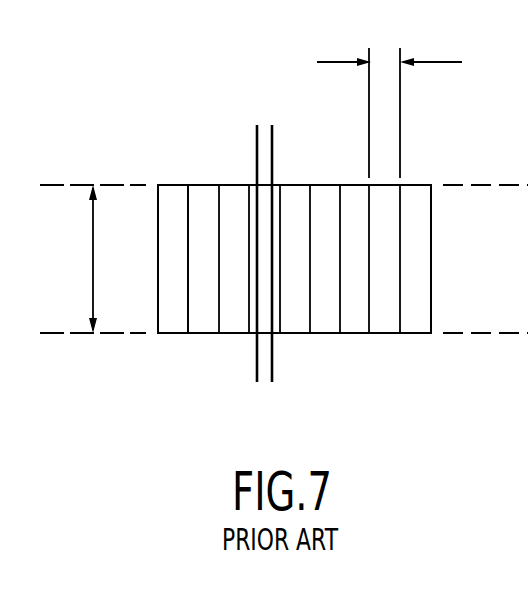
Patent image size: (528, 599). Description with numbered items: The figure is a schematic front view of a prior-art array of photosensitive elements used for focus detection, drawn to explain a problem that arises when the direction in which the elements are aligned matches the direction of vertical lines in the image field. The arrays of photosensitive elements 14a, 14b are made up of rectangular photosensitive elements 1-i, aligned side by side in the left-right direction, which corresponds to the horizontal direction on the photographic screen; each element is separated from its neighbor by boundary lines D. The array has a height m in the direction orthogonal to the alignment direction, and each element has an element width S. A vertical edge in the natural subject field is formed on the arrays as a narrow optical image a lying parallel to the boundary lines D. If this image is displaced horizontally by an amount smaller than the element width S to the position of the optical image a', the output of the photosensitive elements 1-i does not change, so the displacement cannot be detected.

The photosensitive elements 1-i is at (241, 320).
The boundary lines D is at (187, 313).
The array of photosensitive elements 14a is at (371, 333).
The array of photosensitive elements 14b is at (399, 229).
The optical image a is at (233, 240).
The optical image a' is at (297, 240).
The height of the array m is at (77, 259).
The element width S is at (389, 44).